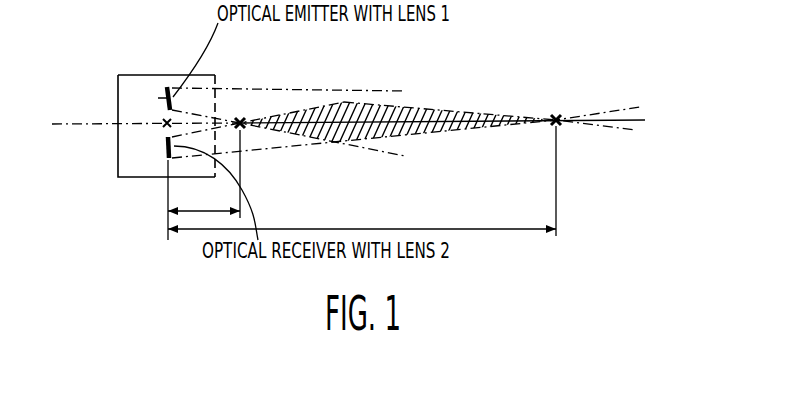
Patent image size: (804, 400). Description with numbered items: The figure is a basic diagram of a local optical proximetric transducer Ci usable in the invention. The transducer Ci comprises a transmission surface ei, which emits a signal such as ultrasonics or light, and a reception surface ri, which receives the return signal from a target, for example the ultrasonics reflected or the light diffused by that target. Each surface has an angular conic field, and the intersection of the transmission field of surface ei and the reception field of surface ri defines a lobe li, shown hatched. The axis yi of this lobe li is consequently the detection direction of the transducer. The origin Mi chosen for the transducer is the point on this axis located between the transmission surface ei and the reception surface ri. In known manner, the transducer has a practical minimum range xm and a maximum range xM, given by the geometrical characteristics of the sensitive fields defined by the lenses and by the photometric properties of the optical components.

The local proximetric transducer Ci is at (144, 72).
The transmission surface ei is at (165, 98).
The reception surface ri is at (167, 150).
The origin of the transducer Mi is at (162, 122).
The lobe li is at (345, 106).
The axis of the lobe yi is at (487, 115).
The practical minimum range xm is at (204, 196).
The maximum range xM is at (362, 211).